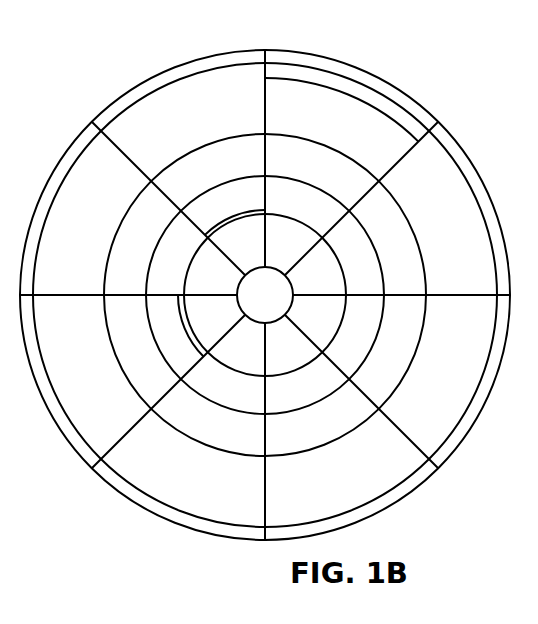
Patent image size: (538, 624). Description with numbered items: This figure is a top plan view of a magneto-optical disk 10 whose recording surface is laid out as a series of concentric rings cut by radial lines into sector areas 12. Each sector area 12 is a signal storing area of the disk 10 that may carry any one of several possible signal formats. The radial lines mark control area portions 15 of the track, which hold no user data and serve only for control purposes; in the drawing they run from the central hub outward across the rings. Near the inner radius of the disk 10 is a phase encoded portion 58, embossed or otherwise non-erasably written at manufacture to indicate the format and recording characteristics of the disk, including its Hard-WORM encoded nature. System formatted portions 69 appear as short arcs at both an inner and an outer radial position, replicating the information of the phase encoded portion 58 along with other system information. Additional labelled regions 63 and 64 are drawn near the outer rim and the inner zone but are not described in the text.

The magneto-optical disk 10 is at (268, 48).
The sector area 12 is at (350, 485).
The control area portion 15 is at (135, 162).
The phase encoded portion 58 is at (188, 320).
The outer rim ring 63 is at (182, 498).
The arc segment 64 is at (205, 418).
The system formatted portion 69 is at (395, 108).